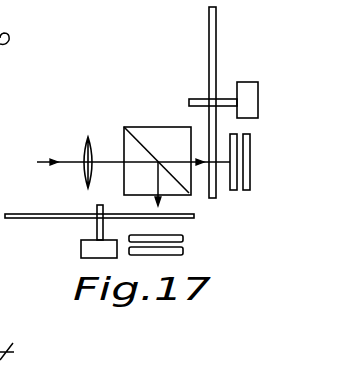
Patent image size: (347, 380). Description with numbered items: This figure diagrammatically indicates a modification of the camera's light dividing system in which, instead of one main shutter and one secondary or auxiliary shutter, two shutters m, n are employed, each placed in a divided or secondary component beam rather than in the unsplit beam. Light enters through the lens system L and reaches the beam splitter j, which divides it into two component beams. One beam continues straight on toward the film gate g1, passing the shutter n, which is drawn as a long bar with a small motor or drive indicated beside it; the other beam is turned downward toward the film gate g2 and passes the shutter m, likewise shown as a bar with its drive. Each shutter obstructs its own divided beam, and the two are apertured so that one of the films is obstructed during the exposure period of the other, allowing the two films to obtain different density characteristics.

The lens system L is at (86, 138).
The beam splitter j is at (146, 131).
The shutter n is at (215, 53).
The film gate g1 is at (262, 142).
The shutter m is at (28, 219).
The film gate g2 is at (183, 252).